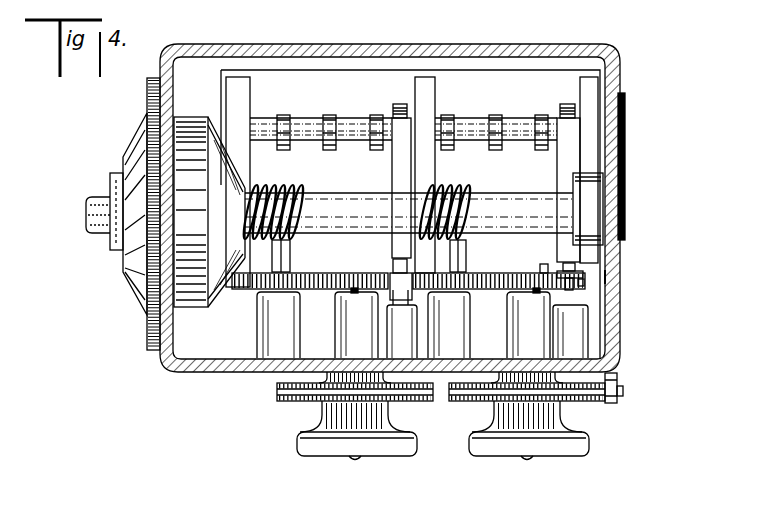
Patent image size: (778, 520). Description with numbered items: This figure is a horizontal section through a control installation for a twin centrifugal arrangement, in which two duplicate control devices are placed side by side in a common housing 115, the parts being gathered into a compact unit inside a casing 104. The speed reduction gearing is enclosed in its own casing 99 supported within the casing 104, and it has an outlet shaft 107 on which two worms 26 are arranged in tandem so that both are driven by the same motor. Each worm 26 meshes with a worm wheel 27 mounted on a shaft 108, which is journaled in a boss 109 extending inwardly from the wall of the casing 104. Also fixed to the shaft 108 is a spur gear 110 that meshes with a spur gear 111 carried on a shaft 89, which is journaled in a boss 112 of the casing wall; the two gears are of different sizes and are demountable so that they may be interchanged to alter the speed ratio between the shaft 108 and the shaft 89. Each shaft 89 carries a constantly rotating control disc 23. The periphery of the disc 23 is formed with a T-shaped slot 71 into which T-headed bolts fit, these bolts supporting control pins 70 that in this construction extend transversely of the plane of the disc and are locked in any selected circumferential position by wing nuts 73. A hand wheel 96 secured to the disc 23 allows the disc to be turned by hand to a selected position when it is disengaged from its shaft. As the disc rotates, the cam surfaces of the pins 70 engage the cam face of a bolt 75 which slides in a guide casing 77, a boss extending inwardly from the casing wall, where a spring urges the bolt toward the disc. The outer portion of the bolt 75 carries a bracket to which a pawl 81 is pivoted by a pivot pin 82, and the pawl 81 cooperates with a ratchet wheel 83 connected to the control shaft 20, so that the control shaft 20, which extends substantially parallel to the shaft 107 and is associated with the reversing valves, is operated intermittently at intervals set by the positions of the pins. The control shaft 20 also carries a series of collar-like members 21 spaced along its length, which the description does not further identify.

The casing 104 is at (572, 47).
The casing 99 is at (152, 140).
The control shaft 20 is at (306, 124).
The collar 21 is at (283, 117).
The ratchet wheel 83 is at (400, 106).
The pawl 81 is at (397, 168).
The worm 26 is at (276, 191).
The worm wheel 27 is at (326, 193).
The outlet shaft 107 is at (523, 200).
The shaft 108 is at (283, 256).
The spur gear 110 is at (236, 288).
The spur gear 111 is at (376, 274).
The pivot pin 82 is at (582, 271).
The bolt 75 is at (583, 283).
The common housing 115 is at (618, 277).
The shaft 89 is at (354, 292).
The boss 109 is at (257, 338).
The boss 112 is at (343, 331).
The guide casing 77 is at (393, 336).
The T-shaped slot 71 is at (277, 389).
The control disc 23 is at (280, 403).
The hand wheel 96 is at (300, 445).
The control pins 70 is at (617, 380).
The wing nuts 73 is at (622, 396).